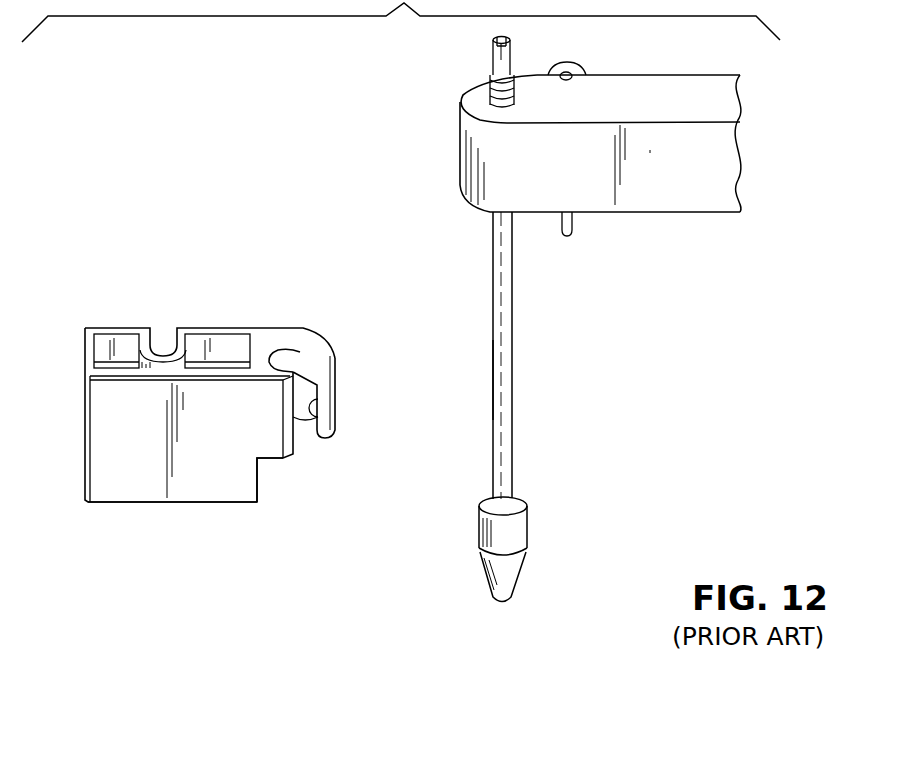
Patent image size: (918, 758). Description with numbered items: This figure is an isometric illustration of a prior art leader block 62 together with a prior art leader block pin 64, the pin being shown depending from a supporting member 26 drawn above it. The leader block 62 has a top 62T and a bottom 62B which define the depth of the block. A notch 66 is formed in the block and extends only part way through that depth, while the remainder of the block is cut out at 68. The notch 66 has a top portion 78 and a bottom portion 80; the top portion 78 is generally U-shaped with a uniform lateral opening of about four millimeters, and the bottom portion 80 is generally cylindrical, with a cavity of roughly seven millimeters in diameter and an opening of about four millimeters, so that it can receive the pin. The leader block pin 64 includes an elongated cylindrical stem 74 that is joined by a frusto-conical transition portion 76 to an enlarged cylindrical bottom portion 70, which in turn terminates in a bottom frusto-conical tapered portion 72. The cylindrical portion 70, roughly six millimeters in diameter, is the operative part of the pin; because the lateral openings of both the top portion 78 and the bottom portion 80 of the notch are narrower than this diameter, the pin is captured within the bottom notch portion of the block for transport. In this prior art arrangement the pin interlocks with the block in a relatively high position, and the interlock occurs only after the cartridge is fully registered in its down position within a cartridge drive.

The support block 26 is at (705, 212).
The leader block pin 64 is at (514, 313).
The elongated cylindrical stem 74 is at (512, 376).
The frusto-conical transition portion 76 is at (520, 500).
The cylindrical bottom portion 70 is at (527, 528).
The frusto-conical tapered portion 72 is at (513, 580).
The leader block 62 is at (140, 473).
The top 62T is at (218, 328).
The bottom 62B is at (185, 502).
The cut out 68 is at (258, 485).
The top portion of the notch 78 is at (300, 352).
The notch 66 is at (318, 412).
The bottom portion of the notch 80 is at (310, 439).